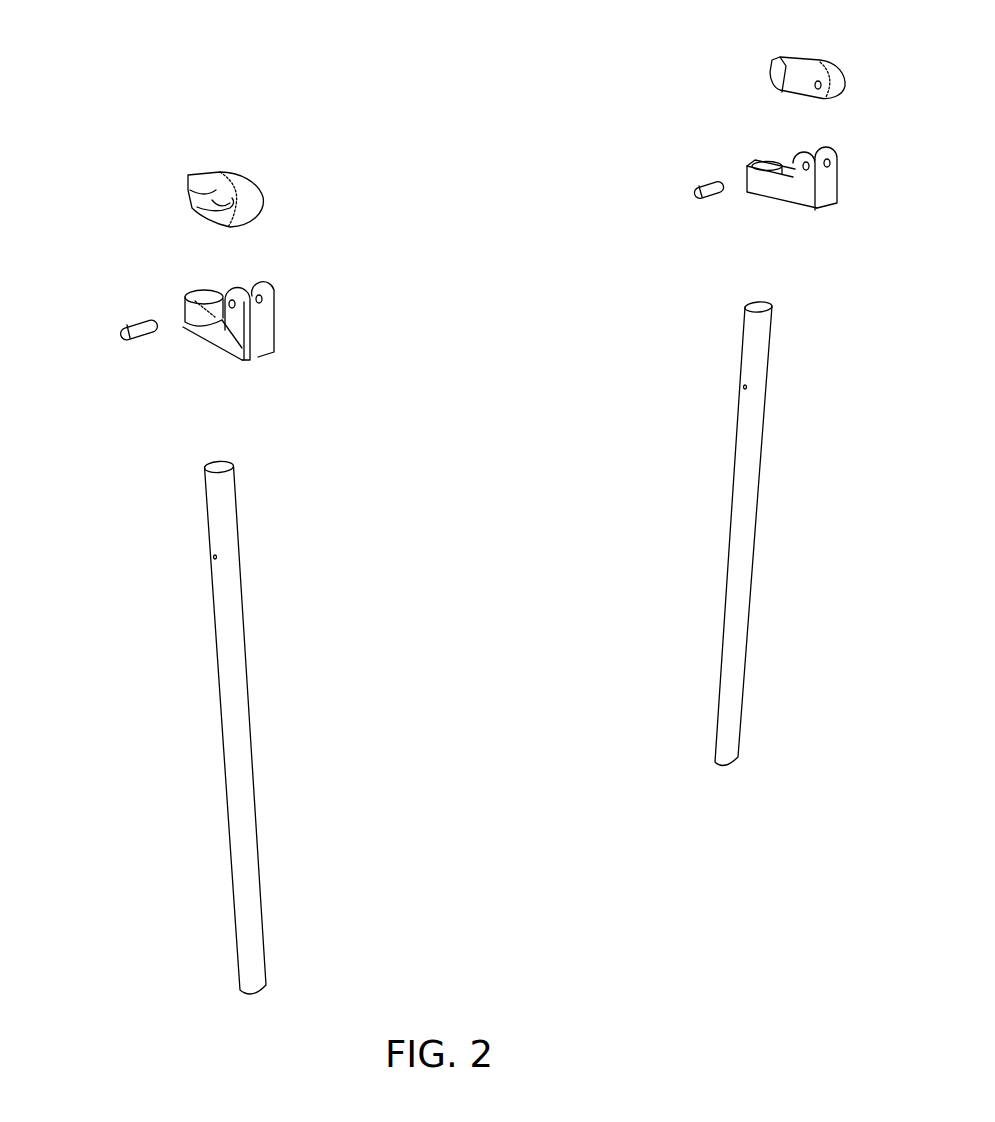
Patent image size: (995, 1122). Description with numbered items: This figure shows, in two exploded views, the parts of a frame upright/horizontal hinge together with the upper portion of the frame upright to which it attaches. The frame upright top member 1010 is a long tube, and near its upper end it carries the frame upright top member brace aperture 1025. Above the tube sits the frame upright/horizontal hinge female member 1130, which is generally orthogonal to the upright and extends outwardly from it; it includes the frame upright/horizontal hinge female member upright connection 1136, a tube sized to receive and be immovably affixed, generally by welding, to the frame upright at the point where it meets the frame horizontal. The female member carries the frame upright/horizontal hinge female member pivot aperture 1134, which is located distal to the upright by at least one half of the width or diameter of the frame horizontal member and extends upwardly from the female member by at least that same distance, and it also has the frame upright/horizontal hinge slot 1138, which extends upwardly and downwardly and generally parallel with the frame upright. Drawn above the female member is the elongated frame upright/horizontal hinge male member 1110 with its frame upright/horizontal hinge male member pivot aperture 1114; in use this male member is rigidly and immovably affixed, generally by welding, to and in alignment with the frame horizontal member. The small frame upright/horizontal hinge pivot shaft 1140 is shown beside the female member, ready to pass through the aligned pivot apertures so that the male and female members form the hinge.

The frame upright top member 1010 is at (243, 697).
The frame upright top member brace aperture 1025 is at (210, 557).
The frame upright/horizontal hinge male member 1110 is at (192, 191).
The frame upright/horizontal hinge male member pivot aperture 1114 is at (212, 207).
The frame upright/horizontal hinge female member 1130 is at (265, 338).
The frame upright/horizontal hinge female member pivot aperture 1134 is at (183, 318).
The frame upright/horizontal hinge female member upright connection 1136 is at (213, 295).
The frame upright/horizontal hinge slot 1138 is at (255, 356).
The frame upright/horizontal hinge pivot shaft 1140 is at (140, 341).